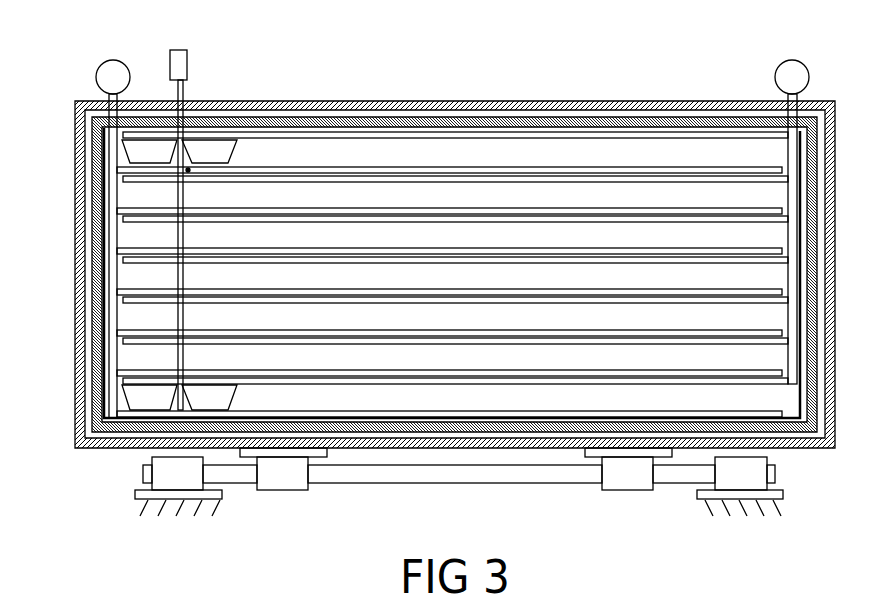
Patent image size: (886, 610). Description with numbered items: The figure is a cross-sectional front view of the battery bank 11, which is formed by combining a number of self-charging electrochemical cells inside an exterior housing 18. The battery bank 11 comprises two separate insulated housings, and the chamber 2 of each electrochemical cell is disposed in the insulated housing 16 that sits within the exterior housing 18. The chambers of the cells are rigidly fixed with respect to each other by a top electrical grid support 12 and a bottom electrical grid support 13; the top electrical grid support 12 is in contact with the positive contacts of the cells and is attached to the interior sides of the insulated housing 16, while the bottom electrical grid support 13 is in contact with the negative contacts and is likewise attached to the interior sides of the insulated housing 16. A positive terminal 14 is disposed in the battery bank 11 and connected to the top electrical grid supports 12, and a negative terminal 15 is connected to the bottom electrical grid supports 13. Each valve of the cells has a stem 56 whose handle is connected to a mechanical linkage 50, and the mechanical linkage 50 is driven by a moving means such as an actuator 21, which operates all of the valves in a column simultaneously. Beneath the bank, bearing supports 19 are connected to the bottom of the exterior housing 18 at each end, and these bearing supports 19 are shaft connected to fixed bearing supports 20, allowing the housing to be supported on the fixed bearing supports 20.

The chamber 2 is at (179, 276).
The battery bank 11 is at (573, 81).
The top electrical grid support 12 is at (501, 387).
The bottom electrical grid support 13 is at (371, 410).
The positive terminal 14 is at (806, 63).
The negative terminal 15 is at (90, 72).
The insulated housing 16 is at (91, 237).
The exterior housing 18 is at (71, 342).
The bearing support 19 is at (314, 490).
The fixed bearing support 20 is at (128, 493).
The actuator 21 is at (181, 47).
The mechanical linkage 50 is at (171, 92).
The stem 56 is at (188, 172).